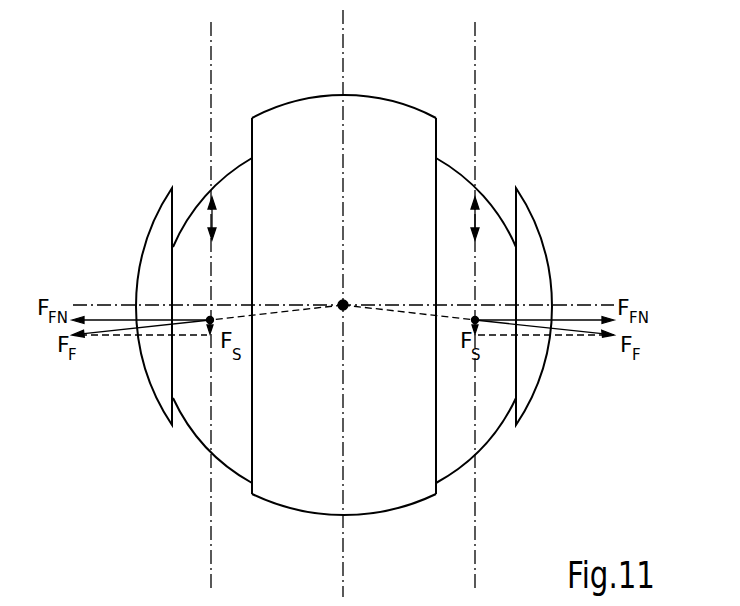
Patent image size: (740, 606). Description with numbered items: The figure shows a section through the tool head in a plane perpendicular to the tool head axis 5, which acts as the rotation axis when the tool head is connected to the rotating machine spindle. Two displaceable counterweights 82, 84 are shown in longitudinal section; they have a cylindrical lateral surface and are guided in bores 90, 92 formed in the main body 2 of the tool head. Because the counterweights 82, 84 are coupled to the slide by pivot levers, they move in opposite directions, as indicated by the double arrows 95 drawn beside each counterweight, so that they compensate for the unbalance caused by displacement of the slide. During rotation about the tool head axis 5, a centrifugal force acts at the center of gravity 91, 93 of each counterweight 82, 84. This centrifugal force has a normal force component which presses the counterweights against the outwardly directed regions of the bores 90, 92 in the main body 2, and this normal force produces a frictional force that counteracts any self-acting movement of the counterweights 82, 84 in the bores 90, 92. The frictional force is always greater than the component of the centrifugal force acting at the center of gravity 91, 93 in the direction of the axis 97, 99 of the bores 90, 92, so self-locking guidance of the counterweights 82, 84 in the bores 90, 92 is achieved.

The main body 2 is at (518, 400).
The tool head axis 5 is at (342, 304).
The counterweight 82 is at (217, 437).
The counterweight 84 is at (468, 437).
The bore 90 is at (182, 172).
The center of gravity 91 is at (211, 316).
The bore 92 is at (505, 172).
The center of gravity 93 is at (475, 316).
The direction of movement 95 is at (208, 195).
The axis of the bore 97 is at (210, 38).
The axis of the bore 99 is at (476, 38).